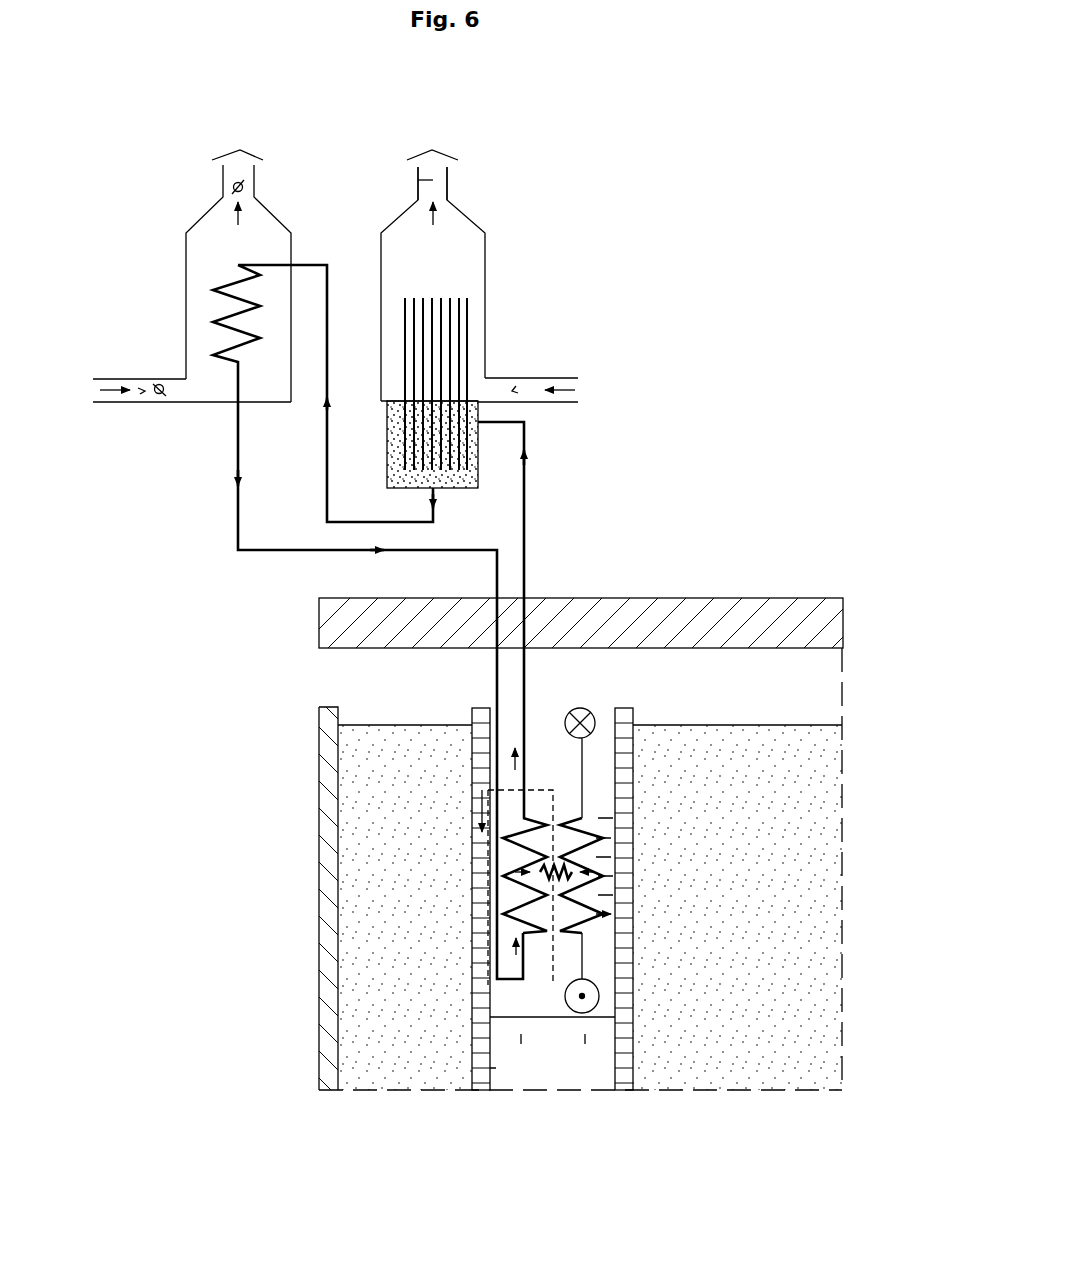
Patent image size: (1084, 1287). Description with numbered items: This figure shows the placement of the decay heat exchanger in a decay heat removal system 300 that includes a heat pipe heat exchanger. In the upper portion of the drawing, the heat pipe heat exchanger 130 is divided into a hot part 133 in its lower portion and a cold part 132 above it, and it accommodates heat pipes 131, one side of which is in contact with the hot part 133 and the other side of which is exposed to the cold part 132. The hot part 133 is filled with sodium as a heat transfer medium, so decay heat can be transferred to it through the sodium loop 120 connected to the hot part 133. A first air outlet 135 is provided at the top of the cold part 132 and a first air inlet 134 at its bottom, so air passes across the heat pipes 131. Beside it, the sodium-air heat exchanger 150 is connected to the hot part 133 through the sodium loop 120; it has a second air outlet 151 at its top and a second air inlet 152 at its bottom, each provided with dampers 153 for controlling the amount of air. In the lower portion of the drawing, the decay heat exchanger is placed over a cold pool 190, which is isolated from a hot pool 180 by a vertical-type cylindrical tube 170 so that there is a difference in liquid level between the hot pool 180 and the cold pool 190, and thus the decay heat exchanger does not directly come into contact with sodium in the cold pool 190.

The decay heat removal system 300 is at (646, 76).
The sodium loop 120 is at (527, 540).
The heat pipe heat exchanger 130 is at (505, 244).
The heat pipes 131 is at (467, 355).
The cold part 132 is at (448, 235).
The hot part 133 is at (452, 490).
The first air inlet 134 is at (516, 390).
The first air outlet 135 is at (420, 181).
The sodium-air heat exchanger 150 is at (283, 204).
The second air outlet 151 is at (242, 168).
The second air inlet 152 is at (141, 394).
The dampers 153 is at (232, 190).
The vertical-type cylindrical tube 170 is at (623, 788).
The hot pool 180 is at (805, 892).
The cold pool 190 is at (553, 1070).